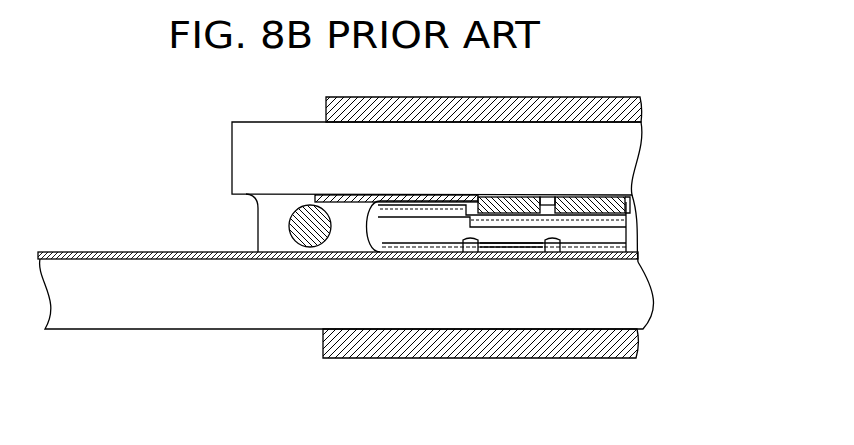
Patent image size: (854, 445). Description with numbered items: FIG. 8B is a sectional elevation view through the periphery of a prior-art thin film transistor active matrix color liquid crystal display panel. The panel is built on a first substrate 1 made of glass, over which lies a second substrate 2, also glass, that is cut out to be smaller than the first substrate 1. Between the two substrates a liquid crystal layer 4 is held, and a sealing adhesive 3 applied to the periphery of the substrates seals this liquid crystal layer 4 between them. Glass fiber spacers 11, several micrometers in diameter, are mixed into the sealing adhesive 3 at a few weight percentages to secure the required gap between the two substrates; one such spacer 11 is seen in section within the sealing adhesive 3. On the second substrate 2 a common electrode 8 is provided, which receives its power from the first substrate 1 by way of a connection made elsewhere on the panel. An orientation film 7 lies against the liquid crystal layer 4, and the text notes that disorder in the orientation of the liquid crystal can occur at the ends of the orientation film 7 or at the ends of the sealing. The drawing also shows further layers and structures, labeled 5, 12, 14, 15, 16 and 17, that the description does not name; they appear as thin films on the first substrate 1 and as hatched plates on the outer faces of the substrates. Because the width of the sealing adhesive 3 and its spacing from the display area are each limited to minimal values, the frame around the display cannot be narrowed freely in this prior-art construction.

The first substrate 1 is at (127, 320).
The second substrate 2 is at (264, 146).
The sealing adhesive 3 is at (272, 213).
The liquid crystal layer 4 is at (626, 236).
The electrode layer 5 is at (108, 200).
The orientation film 7 is at (626, 228).
The common electrode 8 is at (626, 215).
The glass fiber spacer 11 is at (292, 238).
The contact pad 12 is at (555, 262).
The lower electrode layer 14 is at (509, 262).
The protective film 15 is at (597, 196).
The opening 16 is at (548, 196).
The polarizing plate 17 is at (641, 108).